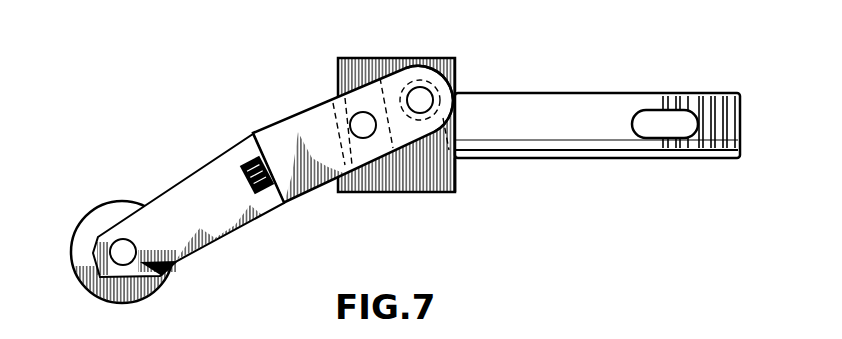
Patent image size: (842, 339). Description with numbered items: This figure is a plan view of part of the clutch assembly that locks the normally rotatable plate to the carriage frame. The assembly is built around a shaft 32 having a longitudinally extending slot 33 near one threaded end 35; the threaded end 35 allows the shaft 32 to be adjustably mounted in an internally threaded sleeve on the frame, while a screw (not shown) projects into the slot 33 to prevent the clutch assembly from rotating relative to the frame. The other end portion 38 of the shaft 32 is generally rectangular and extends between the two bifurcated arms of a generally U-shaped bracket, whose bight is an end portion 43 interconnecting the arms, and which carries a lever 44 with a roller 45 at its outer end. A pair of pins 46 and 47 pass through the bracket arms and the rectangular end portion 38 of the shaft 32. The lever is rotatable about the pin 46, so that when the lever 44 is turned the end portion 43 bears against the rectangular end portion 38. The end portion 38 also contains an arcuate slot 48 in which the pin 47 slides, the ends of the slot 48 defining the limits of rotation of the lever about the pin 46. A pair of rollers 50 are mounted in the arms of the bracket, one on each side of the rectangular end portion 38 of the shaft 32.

The shaft 32 is at (577, 130).
The longitudinally extending slot 33 is at (678, 118).
The threaded end 35 is at (677, 95).
The end portion 38 is at (373, 58).
The end portion 43 is at (312, 132).
The lever 44 is at (213, 183).
The roller 45 is at (120, 210).
The pin 46 is at (350, 123).
The pin 47 is at (418, 95).
The arcuate slot 48 is at (455, 173).
The rollers 50 is at (450, 85).